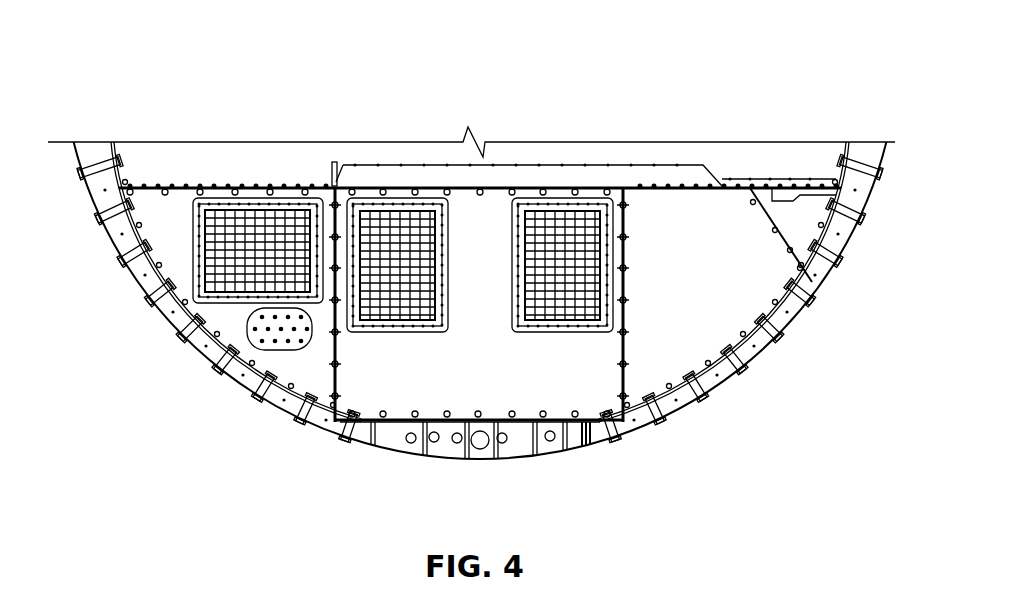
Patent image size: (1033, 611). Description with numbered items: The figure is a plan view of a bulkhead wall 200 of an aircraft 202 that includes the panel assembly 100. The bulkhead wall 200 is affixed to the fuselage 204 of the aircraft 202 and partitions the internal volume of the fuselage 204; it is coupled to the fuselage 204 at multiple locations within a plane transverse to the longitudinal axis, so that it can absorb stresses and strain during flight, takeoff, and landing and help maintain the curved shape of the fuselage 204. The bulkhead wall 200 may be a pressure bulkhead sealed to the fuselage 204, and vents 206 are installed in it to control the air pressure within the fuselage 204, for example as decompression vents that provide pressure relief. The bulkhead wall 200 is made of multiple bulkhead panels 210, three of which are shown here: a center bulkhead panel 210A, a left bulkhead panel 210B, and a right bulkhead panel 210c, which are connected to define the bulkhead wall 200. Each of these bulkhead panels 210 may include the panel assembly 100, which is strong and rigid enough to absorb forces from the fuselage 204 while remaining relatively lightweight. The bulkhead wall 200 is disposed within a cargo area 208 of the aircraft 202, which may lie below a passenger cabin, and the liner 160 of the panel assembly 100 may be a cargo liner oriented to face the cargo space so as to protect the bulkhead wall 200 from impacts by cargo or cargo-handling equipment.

The panel assembly 100 is at (677, 233).
The liner 160 is at (692, 312).
The bulkhead wall 200 is at (308, 188).
The aircraft 202 is at (178, 141).
The fuselage 204 is at (118, 228).
The vents 206 is at (238, 230).
The cargo area 208 is at (766, 287).
The bulkhead panels 210 is at (473, 223).
The center bulkhead panel 210A is at (497, 387).
The left bulkhead panel 210B is at (167, 227).
The right bulkhead panel 210c is at (720, 230).